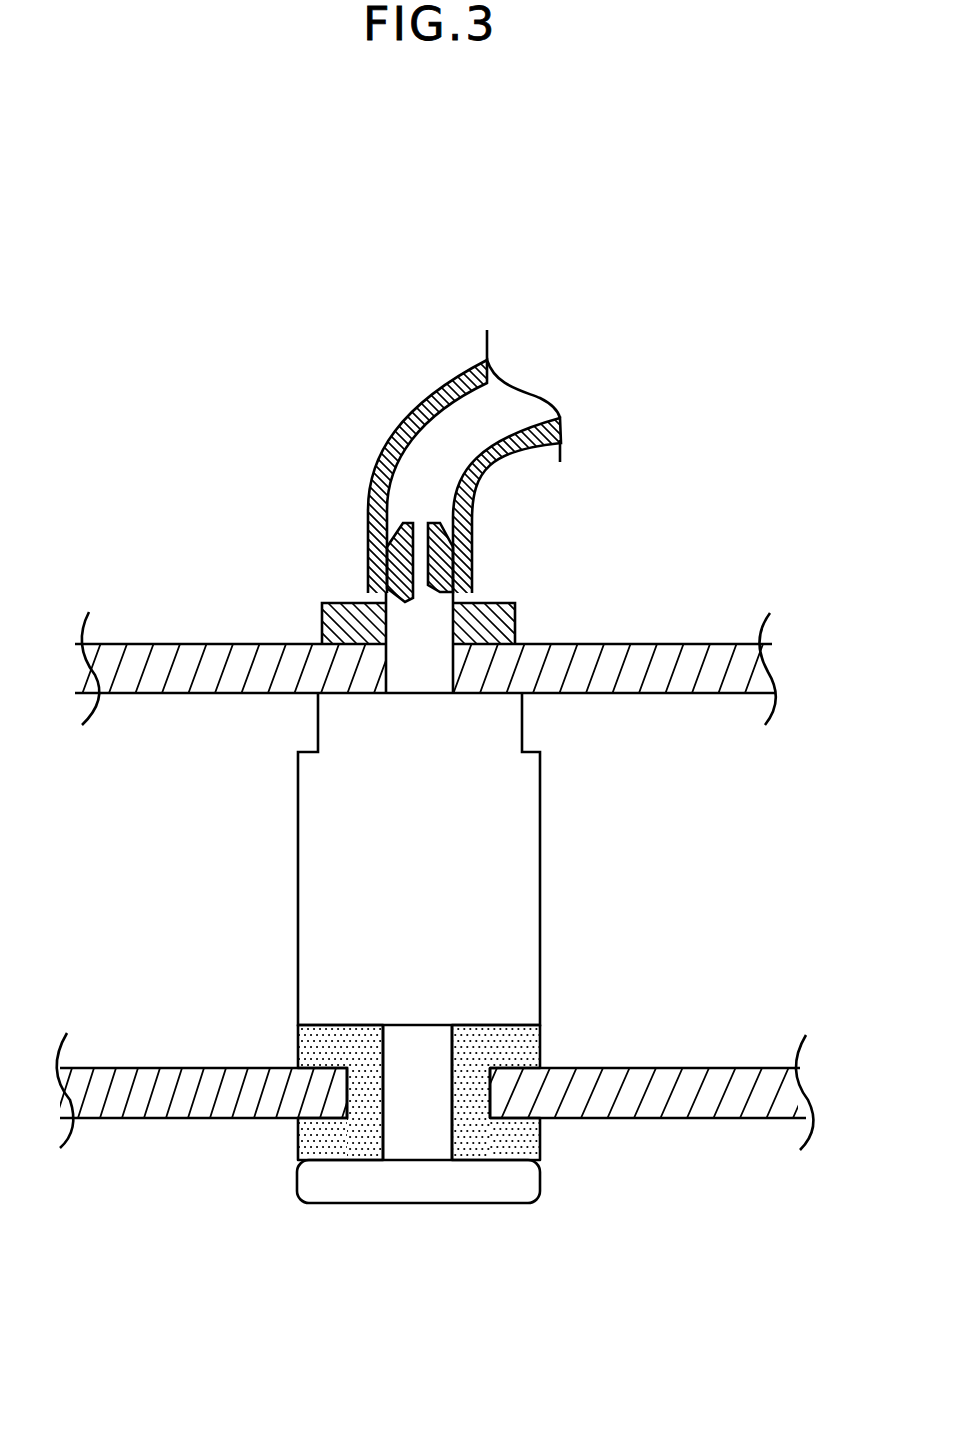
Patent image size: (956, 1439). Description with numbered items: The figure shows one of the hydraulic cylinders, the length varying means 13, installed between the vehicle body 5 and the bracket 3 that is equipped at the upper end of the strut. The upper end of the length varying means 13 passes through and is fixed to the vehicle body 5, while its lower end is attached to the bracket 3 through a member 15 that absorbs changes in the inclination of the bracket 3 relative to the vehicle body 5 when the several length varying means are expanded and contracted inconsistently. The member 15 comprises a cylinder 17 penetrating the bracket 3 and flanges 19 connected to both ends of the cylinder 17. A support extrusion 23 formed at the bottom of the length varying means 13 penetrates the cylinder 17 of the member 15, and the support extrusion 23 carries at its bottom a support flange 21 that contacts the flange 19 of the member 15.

The bracket 3 is at (176, 1098).
The vehicle body 5 is at (218, 655).
The length varying means 13 is at (262, 854).
The member 15 is at (540, 1169).
The cylinder 17 is at (472, 1095).
The flanges 19 is at (543, 1048).
The support flange 21 is at (313, 1185).
The support extrusion 23 is at (421, 1186).